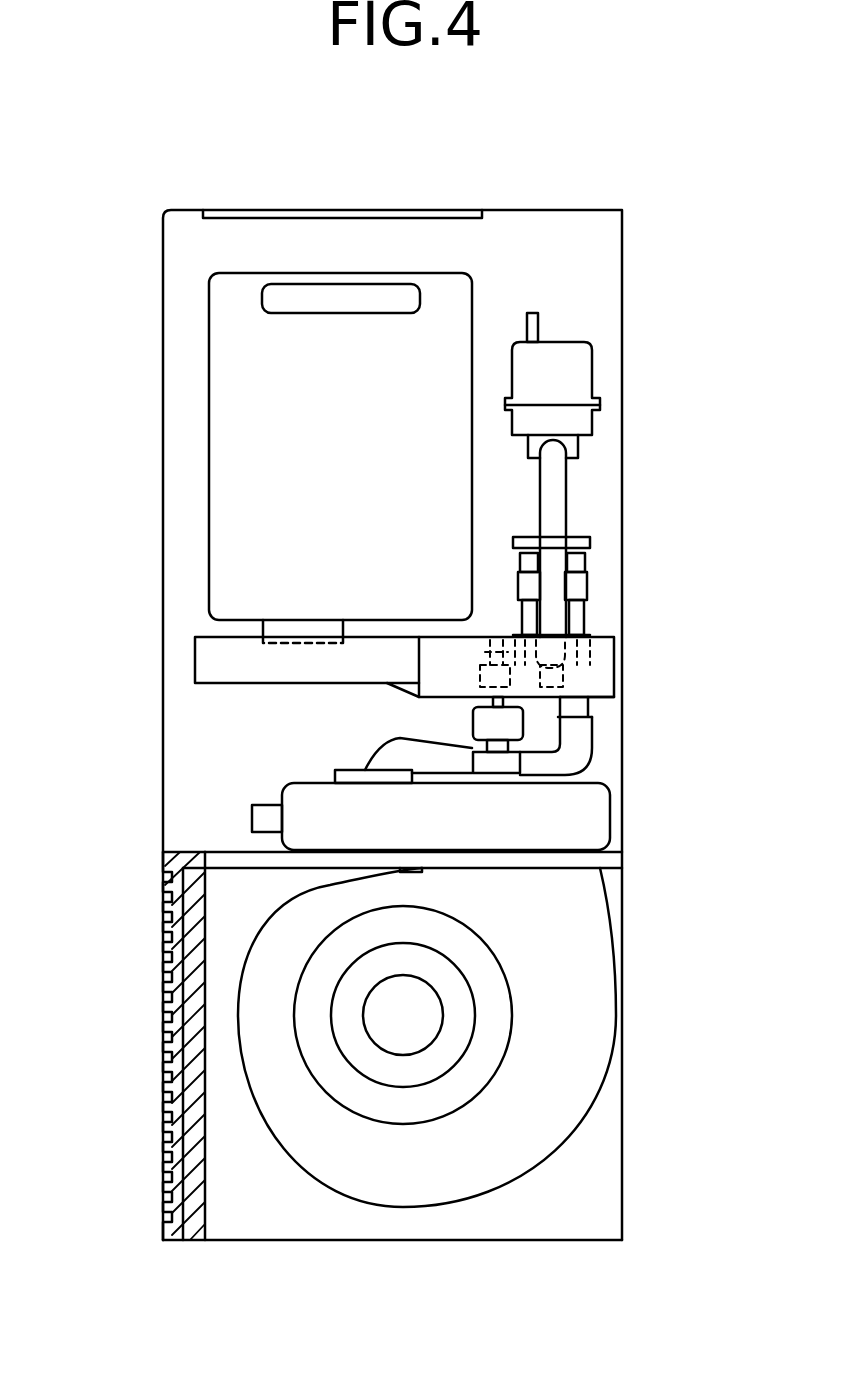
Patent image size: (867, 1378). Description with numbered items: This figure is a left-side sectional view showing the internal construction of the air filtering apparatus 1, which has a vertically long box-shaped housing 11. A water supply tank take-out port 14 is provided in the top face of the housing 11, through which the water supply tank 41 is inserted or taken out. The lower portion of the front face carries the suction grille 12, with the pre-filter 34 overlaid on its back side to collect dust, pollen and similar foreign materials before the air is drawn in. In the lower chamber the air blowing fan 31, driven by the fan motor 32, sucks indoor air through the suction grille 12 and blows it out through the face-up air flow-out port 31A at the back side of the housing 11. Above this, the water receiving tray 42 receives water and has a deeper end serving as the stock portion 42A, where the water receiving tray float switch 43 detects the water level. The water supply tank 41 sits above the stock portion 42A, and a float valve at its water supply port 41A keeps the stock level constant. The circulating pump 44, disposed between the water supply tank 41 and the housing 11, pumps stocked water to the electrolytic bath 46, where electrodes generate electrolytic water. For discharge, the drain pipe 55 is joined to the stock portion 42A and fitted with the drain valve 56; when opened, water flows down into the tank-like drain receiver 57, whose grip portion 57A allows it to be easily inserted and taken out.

The air filtering apparatus 1 is at (723, 143).
The housing 11 is at (598, 208).
The water supply tank take-out port 14 is at (457, 212).
The suction grille 12 is at (155, 1140).
The air blowing fan 31 is at (558, 1085).
The air flow-out port 31A is at (562, 868).
The fan motor 32 is at (457, 1025).
The pre-filter 34 is at (192, 1207).
The water supply tank 41 is at (215, 410).
The water supply port 41A is at (283, 648).
The water receiving tray 42 is at (193, 667).
The stock portion 42A is at (613, 693).
The water receiving tray float switch 43 is at (517, 673).
The circulating pump 44 is at (592, 633).
The electrolytic bath 46 is at (578, 372).
The drain pipe 55 is at (582, 733).
The drain valve 56 is at (517, 732).
The drain receiver 57 is at (607, 837).
The grip portion 57A is at (252, 818).